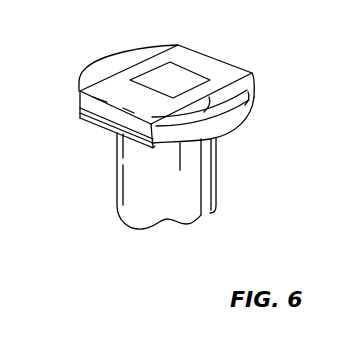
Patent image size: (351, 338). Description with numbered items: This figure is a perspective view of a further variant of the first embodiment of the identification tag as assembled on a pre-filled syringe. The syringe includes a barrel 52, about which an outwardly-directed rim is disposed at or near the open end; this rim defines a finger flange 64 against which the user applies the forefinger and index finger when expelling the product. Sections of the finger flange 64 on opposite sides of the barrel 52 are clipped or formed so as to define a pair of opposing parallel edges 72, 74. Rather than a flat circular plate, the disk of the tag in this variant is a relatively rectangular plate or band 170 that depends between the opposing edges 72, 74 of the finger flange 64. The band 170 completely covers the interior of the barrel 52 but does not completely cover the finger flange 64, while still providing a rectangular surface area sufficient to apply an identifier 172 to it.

The barrel 52 is at (210, 185).
The finger flange 64 is at (248, 110).
The opposing parallel edge 72 is at (80, 91).
The opposing parallel edge 74 is at (254, 76).
The band 170 is at (202, 62).
The identifier 172 is at (153, 75).